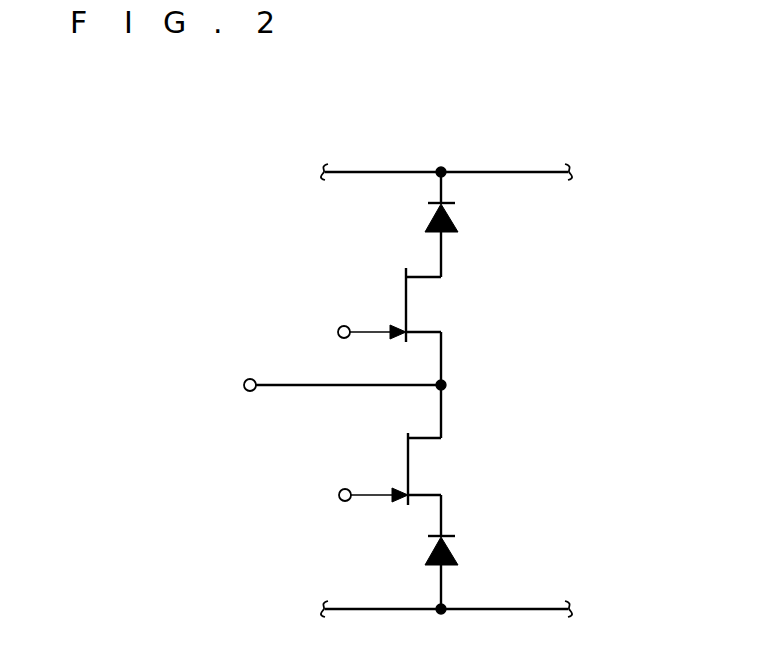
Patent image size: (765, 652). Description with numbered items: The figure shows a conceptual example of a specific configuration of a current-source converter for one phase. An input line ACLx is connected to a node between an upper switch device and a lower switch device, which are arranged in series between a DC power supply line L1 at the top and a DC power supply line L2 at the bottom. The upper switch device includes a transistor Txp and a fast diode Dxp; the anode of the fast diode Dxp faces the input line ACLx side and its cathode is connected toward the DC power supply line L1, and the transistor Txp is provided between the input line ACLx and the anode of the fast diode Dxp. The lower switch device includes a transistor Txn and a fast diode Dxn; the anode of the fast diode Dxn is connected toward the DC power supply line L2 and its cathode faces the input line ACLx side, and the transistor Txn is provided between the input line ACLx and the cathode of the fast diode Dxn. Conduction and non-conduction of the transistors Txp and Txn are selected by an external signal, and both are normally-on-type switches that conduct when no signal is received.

The DC power supply line L1 is at (532, 170).
The DC power supply line L2 is at (548, 608).
The fast diode Dxp is at (453, 218).
The fast diode Dxn is at (453, 550).
The transistor Txp is at (445, 298).
The transistor Txn is at (448, 462).
The input line ACLx is at (275, 383).